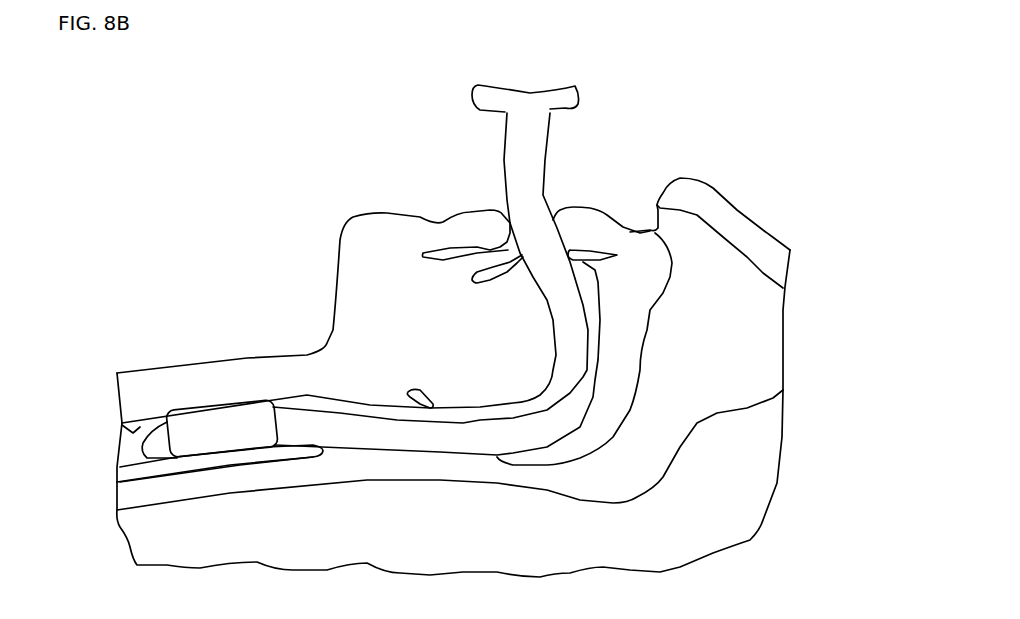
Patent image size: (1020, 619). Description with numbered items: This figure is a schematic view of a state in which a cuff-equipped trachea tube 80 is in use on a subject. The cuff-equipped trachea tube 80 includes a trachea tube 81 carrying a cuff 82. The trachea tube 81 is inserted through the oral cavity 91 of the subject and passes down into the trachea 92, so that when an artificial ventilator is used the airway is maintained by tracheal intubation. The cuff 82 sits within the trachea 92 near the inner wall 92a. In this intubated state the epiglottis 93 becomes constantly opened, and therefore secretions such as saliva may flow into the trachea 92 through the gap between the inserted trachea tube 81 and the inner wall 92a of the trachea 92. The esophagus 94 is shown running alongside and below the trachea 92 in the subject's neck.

The cuff-equipped trachea tube 80 is at (548, 128).
The trachea tube 81 is at (338, 417).
The cuff 82 is at (267, 405).
The oral cavity 91 is at (585, 275).
The trachea 92 is at (128, 447).
The inner wall 92a is at (128, 428).
The epiglottis 93 is at (433, 392).
The esophagus 94 is at (128, 493).